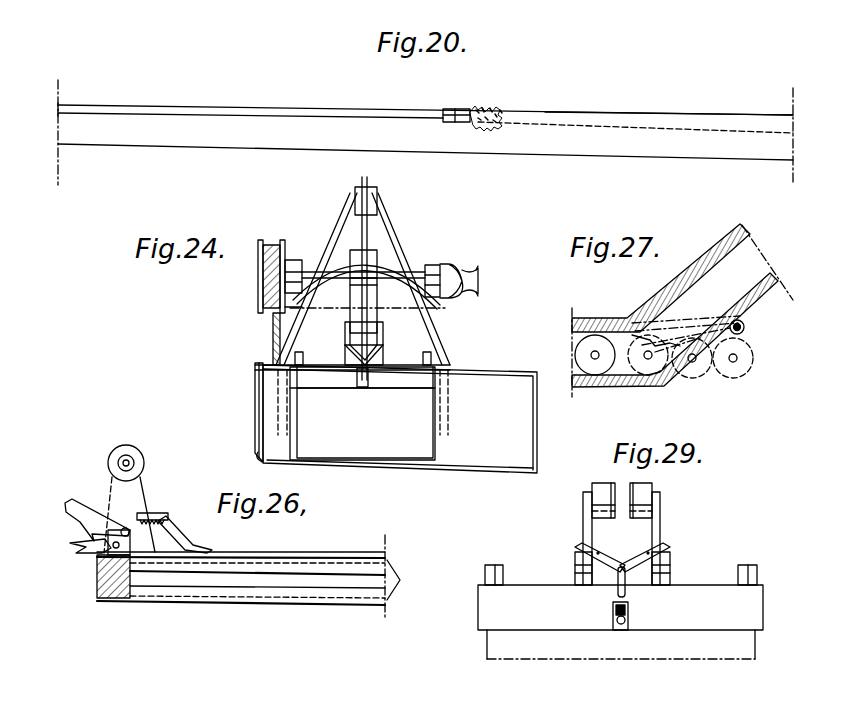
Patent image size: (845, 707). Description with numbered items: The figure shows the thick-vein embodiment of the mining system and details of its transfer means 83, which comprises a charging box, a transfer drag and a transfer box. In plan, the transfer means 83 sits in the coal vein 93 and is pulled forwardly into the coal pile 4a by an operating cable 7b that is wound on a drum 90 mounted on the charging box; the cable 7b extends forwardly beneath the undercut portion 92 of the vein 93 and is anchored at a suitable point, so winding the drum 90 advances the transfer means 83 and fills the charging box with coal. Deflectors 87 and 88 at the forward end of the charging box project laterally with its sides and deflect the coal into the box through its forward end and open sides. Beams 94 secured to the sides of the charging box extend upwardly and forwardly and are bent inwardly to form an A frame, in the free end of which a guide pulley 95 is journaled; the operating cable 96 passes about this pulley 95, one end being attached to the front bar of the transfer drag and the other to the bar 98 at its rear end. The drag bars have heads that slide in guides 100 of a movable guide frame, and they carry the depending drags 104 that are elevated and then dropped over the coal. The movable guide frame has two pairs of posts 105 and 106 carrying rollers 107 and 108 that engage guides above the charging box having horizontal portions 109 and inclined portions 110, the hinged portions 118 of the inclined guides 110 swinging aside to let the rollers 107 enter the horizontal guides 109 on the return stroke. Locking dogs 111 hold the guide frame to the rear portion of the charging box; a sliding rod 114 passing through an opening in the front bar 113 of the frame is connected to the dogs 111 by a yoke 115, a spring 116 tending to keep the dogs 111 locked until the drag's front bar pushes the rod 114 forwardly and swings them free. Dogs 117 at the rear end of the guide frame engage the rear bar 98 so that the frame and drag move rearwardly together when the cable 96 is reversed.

In FIG. 20, the coal pile 4a is at (495, 108).
In FIG. 20, the operating cable 7b is at (612, 124).
In FIG. 24, the operating cable 7b is at (248, 462).
In FIG. 20, the transfer means 83 is at (447, 109).
In FIG. 24, the deflector 87 is at (400, 419).
In FIG. 24, the deflector 88 is at (254, 410).
In FIG. 24, the drum 90 is at (285, 240).
In FIG. 20, the undercut portion 92 is at (665, 111).
In FIG. 20, the coal vein 93 is at (172, 137).
In FIG. 24, the beams 94 is at (398, 224).
In FIG. 24, the guide pulley 95 is at (370, 182).
In FIG. 20, the operating cable 96 is at (290, 104).
In FIG. 24, the operating cable 96 is at (362, 295).
In FIG. 29, the operating cable 96 is at (621, 630).
In FIG. 26, the bar 98 is at (120, 598).
In FIG. 26, the guides 100 is at (409, 580).
In FIG. 29, the drags 104 is at (718, 657).
In FIG. 24, the posts 105 is at (385, 333).
In FIG. 29, the posts 105 is at (660, 522).
In FIG. 26, the posts 106 is at (140, 490).
In FIG. 27, the rollers 107 is at (597, 368).
In FIG. 29, the rollers 107 is at (632, 514).
In FIG. 26, the rollers 108 is at (130, 447).
In FIG. 27, the horizontal portions 109 is at (572, 338).
In FIG. 24, the inclined portions 110 is at (375, 268).
In FIG. 27, the inclined portions 110 is at (689, 317).
In FIG. 26, the locking dogs 111 is at (78, 503).
In FIG. 29, the locking dogs 111 is at (575, 575).
In FIG. 29, the front bar 113 is at (620, 607).
In FIG. 26, the sliding rod 114 is at (350, 557).
In FIG. 29, the sliding rod 114 is at (626, 585).
In FIG. 26, the yoke 115 is at (186, 543).
In FIG. 26, the spring 116 is at (160, 516).
In FIG. 29, the spring 116 is at (622, 565).
In FIG. 26, the dogs 117 is at (86, 553).
In FIG. 29, the dogs 117 is at (494, 565).
In FIG. 27, the hinged portions 118 is at (684, 365).